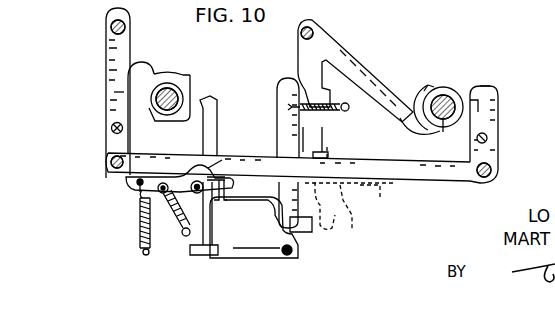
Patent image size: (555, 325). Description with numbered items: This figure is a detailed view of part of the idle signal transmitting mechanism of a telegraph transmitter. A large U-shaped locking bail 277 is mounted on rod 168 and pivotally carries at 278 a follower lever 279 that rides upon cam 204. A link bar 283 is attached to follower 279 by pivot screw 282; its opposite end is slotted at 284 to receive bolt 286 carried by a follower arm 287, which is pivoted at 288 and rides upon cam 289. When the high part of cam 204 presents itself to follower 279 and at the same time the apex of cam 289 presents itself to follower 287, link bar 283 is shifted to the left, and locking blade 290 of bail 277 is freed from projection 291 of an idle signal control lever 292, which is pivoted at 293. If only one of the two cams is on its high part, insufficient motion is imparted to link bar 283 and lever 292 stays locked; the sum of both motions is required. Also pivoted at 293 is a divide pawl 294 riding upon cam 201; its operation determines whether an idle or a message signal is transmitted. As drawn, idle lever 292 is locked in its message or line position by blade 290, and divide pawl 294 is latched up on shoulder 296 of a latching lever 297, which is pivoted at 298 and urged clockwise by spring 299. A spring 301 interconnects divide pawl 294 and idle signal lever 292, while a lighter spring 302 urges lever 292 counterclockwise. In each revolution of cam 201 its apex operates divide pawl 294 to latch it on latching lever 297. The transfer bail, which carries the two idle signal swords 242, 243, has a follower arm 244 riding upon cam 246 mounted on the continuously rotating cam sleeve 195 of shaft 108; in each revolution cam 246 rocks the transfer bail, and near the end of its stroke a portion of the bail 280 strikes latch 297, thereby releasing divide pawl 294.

The shaft 108 is at (434, 136).
The rod 168 is at (121, 20).
The cam sleeve 195 is at (489, 88).
The cam 201 is at (161, 116).
The cam 204 is at (154, 78).
The idle signal sword 242 is at (350, 192).
The idle signal sword 243 is at (372, 188).
The follower arm 244 is at (380, 90).
The cam 246 is at (438, 84).
The locking bail 277 is at (116, 50).
The pivot 278 is at (112, 132).
The follower lever 279 is at (126, 88).
The bail 280 is at (306, 92).
The pivot screw 282 is at (111, 163).
The link bar 283 is at (263, 158).
The slot 284 is at (493, 171).
The bolt 286 is at (485, 183).
The follower arm 287 is at (499, 147).
The pivot 288 is at (499, 129).
The cam 289 is at (457, 90).
The locking blade 290 is at (140, 192).
The projection 291 is at (140, 178).
The idle signal control lever 292 is at (259, 217).
The pivot 293 is at (212, 172).
The divide pawl 294 is at (218, 110).
The shoulder 296 is at (208, 230).
The latching lever 297 is at (268, 252).
The pivot 298 is at (289, 255).
The spring 299 is at (343, 112).
The spring 301 is at (171, 226).
The spring 302 is at (140, 212).